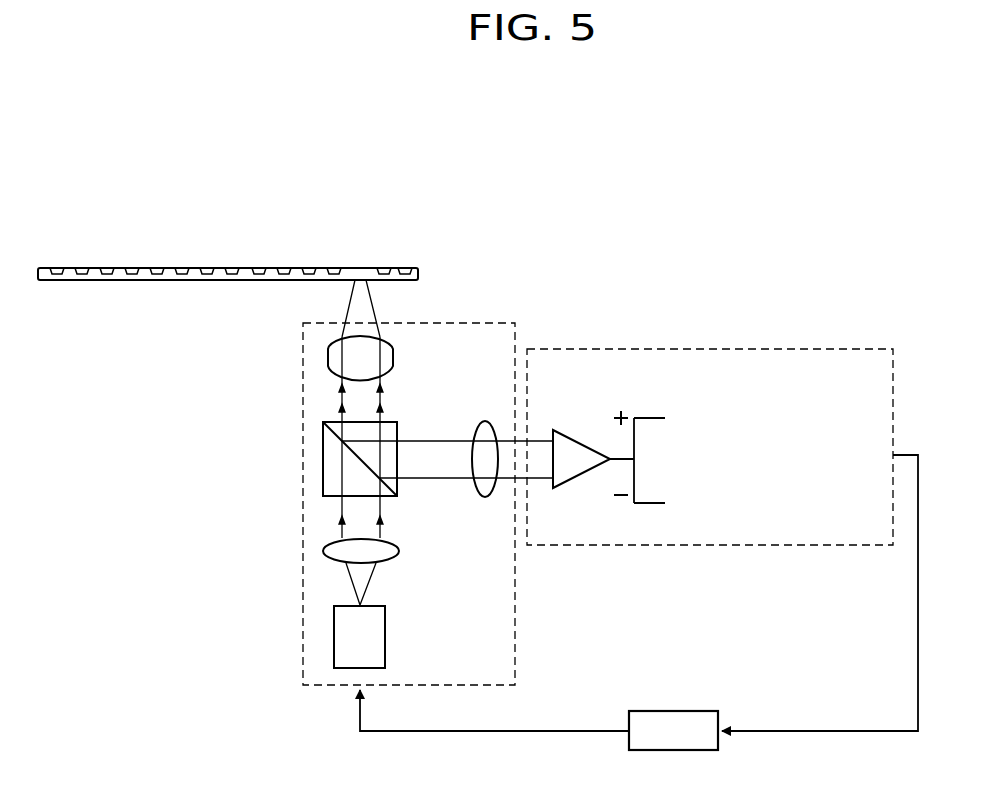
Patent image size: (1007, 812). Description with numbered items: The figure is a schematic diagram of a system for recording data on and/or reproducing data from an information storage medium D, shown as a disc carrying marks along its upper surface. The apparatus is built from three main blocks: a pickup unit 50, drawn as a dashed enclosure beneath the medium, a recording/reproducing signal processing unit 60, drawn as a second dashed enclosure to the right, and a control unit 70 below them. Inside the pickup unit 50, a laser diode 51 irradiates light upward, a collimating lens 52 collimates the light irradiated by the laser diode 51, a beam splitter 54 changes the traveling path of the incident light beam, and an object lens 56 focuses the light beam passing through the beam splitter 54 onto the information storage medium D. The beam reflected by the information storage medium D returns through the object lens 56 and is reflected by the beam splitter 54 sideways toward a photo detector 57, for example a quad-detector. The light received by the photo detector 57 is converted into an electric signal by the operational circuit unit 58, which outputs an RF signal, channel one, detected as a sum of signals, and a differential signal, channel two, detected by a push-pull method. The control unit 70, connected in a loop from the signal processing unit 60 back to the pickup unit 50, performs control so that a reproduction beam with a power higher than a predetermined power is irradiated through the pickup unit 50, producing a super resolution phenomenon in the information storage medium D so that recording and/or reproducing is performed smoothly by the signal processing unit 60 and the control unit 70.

The information storage medium D is at (217, 262).
The pickup unit 50 is at (298, 682).
The laser diode 51 is at (334, 630).
The collimating lens 52 is at (323, 549).
The beam splitter 54 is at (323, 453).
The object lens 56 is at (328, 353).
The photo detector 57 is at (486, 421).
The operational circuit unit 58 is at (580, 440).
The recording/reproducing signal processing unit 60 is at (662, 345).
The control unit 70 is at (694, 710).